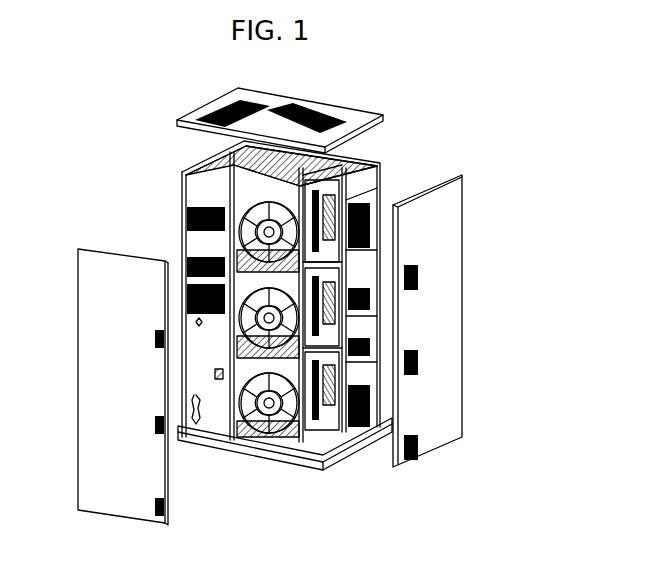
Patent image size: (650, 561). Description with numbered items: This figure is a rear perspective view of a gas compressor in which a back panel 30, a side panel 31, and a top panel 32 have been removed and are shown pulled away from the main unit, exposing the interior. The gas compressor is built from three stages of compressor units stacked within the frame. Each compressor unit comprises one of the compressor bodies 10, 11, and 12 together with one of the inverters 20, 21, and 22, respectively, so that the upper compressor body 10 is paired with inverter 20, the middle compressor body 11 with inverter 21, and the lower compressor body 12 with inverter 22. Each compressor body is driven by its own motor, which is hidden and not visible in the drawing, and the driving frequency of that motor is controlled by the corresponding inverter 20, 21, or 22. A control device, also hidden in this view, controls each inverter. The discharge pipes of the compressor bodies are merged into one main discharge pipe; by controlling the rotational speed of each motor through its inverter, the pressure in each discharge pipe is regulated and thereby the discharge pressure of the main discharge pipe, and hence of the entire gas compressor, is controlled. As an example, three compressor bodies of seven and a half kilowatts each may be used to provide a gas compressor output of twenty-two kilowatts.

The compressor body 10 is at (260, 226).
The compressor body 11 is at (255, 320).
The compressor body 12 is at (250, 405).
The inverter 20 is at (362, 176).
The inverter 21 is at (340, 330).
The inverter 22 is at (357, 423).
The back panel 30 is at (118, 268).
The side panel 31 is at (447, 233).
The top panel 32 is at (352, 112).